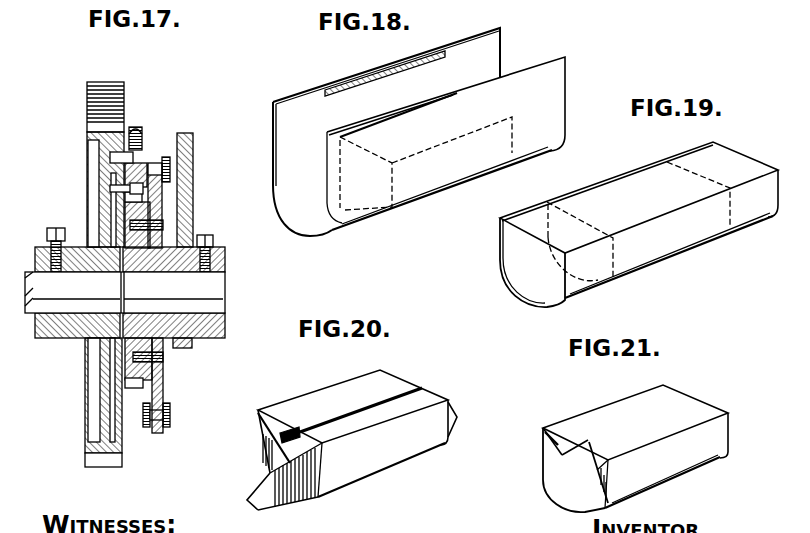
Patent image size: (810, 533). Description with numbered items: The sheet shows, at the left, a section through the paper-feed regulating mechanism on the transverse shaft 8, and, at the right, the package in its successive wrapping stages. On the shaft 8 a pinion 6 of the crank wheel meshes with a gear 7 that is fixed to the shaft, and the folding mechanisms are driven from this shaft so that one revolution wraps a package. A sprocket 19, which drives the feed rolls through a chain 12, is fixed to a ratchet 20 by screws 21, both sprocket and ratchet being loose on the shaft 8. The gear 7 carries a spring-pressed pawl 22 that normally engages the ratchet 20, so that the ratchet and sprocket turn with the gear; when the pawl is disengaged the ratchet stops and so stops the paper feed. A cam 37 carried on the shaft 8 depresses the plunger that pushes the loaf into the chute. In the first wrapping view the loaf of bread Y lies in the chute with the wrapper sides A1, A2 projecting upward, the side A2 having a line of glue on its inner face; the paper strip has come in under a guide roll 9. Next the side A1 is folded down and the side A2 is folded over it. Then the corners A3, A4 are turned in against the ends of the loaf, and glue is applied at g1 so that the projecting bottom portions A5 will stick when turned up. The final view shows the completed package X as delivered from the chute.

In FIG. 17, the pinion 6 is at (116, 97).
In FIG. 17, the gear 7 is at (103, 182).
In FIG. 17, the transverse shaft 8 is at (125, 292).
In FIG. 17, the chain 12 is at (163, 160).
In FIG. 17, the sprocket 19 is at (163, 386).
In FIG. 17, the ratchet 20 is at (130, 197).
In FIG. 17, the screws 21 is at (164, 226).
In FIG. 17, the spring-pressed pawl 22 is at (145, 141).
In FIG. 17, the cam 37 is at (190, 137).
In FIG. 18, the guide roll 9 is at (432, 55).
In FIG. 18, the wrapper side A1 is at (419, 132).
In FIG. 19, the wrapper side A1 is at (512, 242).
In FIG. 18, the wrapper side A2 is at (466, 60).
In FIG. 19, the wrapper side A2 is at (639, 224).
In FIG. 18, the loaf of bread Y is at (328, 177).
In FIG. 19, the loaf of bread Y is at (560, 268).
In FIG. 20, the completed package X is at (353, 433).
In FIG. 21, the completed package X is at (635, 448).
In FIG. 20, the line of glue g1 is at (285, 432).
In FIG. 20, the corner fold A3 is at (300, 482).
In FIG. 21, the corner fold A3 is at (607, 480).
In FIG. 20, the corner fold A4 is at (263, 452).
In FIG. 21, the corner fold A4 is at (562, 453).
In FIG. 20, the projecting bottom portion A5 is at (250, 498).
In FIG. 21, the projecting bottom portion A5 is at (570, 463).